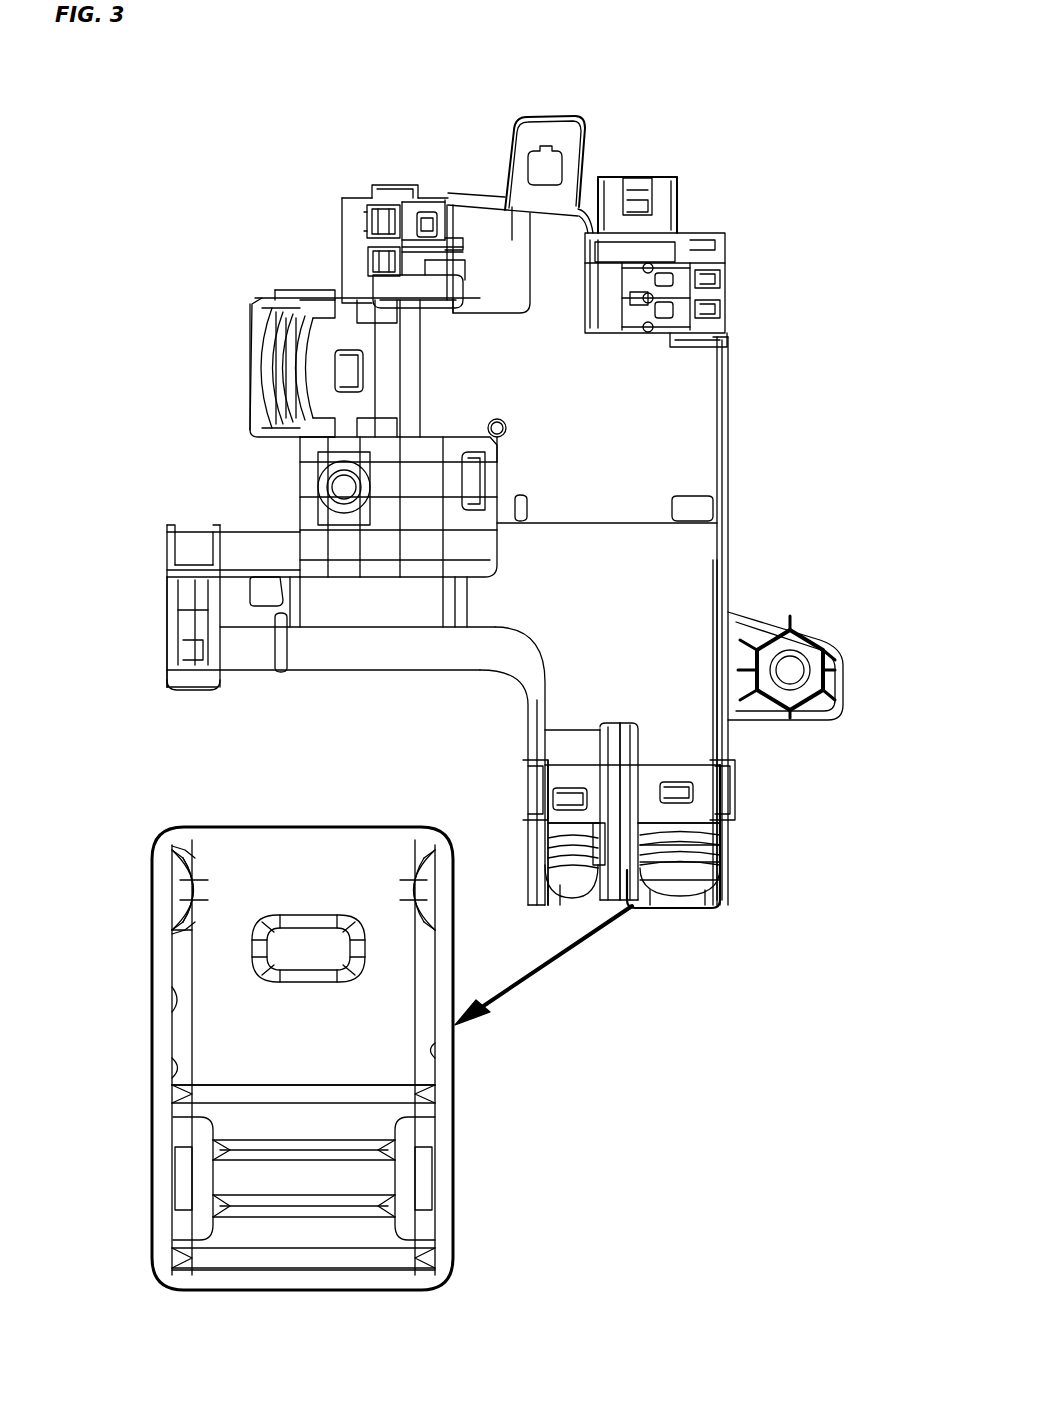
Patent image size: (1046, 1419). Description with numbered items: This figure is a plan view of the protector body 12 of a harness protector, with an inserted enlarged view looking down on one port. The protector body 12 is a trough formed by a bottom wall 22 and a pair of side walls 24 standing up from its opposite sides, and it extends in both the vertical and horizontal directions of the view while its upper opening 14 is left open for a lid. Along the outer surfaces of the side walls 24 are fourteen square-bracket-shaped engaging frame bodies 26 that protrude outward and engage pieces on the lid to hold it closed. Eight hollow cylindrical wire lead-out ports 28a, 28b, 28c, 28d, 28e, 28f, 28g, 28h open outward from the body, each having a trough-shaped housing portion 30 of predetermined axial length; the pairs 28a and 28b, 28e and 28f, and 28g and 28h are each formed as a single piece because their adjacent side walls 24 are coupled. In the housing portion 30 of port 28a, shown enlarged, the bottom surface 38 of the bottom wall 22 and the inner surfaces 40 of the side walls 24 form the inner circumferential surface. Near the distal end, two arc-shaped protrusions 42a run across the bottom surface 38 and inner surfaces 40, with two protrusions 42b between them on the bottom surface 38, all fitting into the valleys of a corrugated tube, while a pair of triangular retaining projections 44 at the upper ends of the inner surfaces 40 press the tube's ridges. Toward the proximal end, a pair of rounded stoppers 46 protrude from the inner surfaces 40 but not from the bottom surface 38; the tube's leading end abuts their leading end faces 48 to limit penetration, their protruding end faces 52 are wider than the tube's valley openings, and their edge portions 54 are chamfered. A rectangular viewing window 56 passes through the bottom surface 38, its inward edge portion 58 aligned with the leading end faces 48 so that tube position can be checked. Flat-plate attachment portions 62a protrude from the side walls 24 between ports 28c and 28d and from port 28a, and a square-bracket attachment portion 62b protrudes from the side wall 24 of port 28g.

The protector body 12 is at (466, 100).
The upper opening 14 is at (716, 580).
The bottom wall 22 is at (633, 642).
The side wall 24 is at (465, 198).
The engaging frame body 26 is at (300, 300).
The wire lead-out port 28a is at (678, 918).
The wire lead-out port 28b is at (570, 900).
The wire lead-out port 28c is at (152, 613).
The wire lead-out port 28d is at (222, 372).
The wire lead-out port 28e is at (366, 260).
The wire lead-out port 28f is at (366, 222).
The wire lead-out port 28g is at (735, 272).
The wire lead-out port 28h is at (735, 312).
The housing portion 30 is at (242, 396).
The bottom surface 38 is at (690, 815).
The inner surface 40 is at (650, 780).
The protrusion 42a is at (682, 876).
The protrusion 42b is at (682, 850).
The retaining projection 44 is at (677, 866).
The stopper 46 is at (636, 778).
The leading end face 48 is at (185, 932).
The protruding end face 52 is at (208, 888).
The edge portion 54 is at (202, 857).
The viewing window 56 is at (350, 375).
The edge portion 58 is at (305, 920).
The attachment portion 62a is at (798, 643).
The attachment portion 62b is at (632, 190).